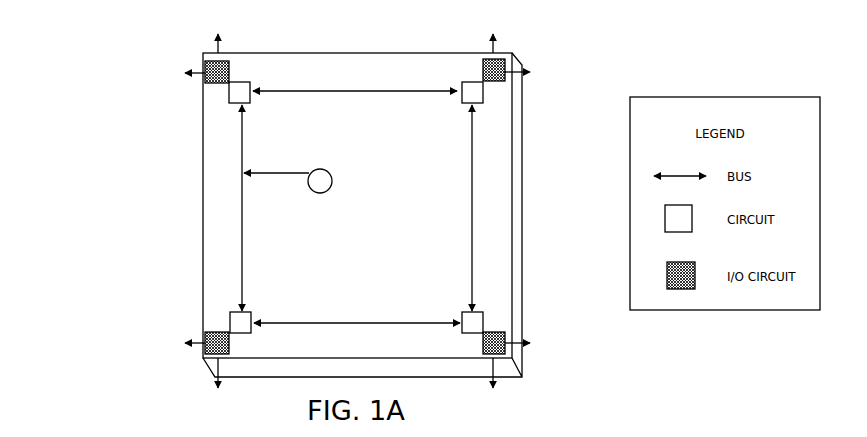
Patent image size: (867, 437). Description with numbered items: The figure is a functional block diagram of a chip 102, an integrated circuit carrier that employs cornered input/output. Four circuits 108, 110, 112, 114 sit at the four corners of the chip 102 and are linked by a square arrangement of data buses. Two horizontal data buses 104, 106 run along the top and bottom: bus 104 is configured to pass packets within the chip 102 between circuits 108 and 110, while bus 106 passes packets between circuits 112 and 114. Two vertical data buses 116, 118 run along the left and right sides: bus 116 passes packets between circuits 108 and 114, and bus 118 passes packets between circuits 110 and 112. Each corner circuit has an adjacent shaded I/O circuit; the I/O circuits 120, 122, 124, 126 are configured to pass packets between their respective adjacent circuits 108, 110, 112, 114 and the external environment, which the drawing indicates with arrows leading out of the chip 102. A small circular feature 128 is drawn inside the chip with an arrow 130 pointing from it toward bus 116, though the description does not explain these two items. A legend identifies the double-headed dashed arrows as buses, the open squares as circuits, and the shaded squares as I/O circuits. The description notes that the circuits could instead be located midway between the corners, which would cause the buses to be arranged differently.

The chip 102 is at (98, 148).
The horizontal data bus 104 is at (350, 93).
The horizontal data bus 106 is at (358, 323).
The circuit 108 is at (229, 103).
The circuit 110 is at (484, 97).
The circuit 112 is at (484, 313).
The circuit 114 is at (230, 317).
The vertical data bus 116 is at (243, 249).
The vertical data bus 118 is at (471, 178).
The I/O circuit 120 is at (204, 70).
The I/O circuit 122 is at (483, 68).
The I/O circuit 124 is at (505, 338).
The I/O circuit 126 is at (205, 356).
The defect/bubble 128 is at (317, 193).
The connection arrow 130 is at (290, 173).